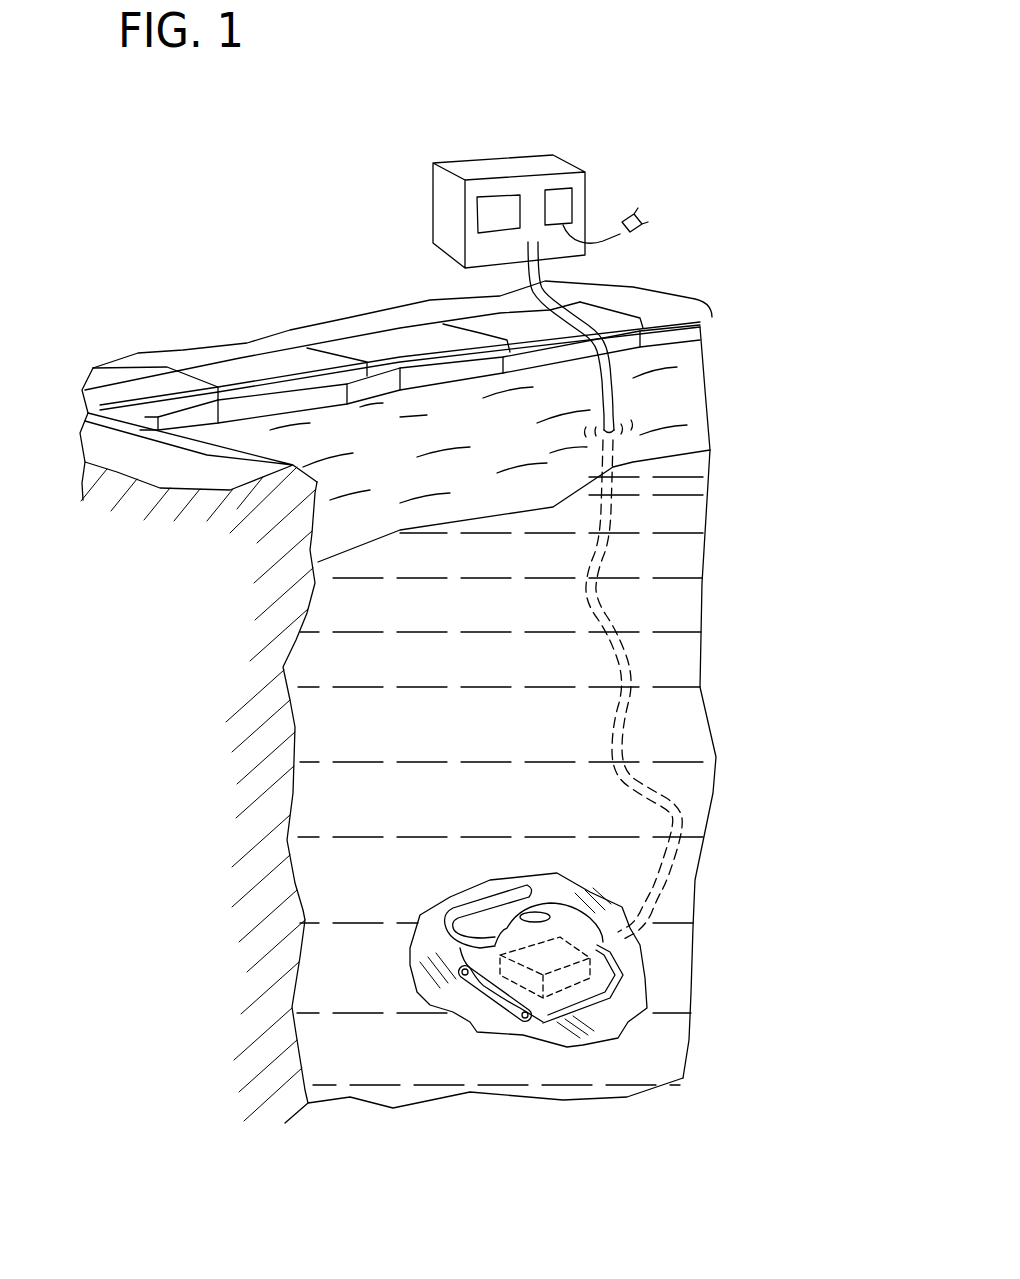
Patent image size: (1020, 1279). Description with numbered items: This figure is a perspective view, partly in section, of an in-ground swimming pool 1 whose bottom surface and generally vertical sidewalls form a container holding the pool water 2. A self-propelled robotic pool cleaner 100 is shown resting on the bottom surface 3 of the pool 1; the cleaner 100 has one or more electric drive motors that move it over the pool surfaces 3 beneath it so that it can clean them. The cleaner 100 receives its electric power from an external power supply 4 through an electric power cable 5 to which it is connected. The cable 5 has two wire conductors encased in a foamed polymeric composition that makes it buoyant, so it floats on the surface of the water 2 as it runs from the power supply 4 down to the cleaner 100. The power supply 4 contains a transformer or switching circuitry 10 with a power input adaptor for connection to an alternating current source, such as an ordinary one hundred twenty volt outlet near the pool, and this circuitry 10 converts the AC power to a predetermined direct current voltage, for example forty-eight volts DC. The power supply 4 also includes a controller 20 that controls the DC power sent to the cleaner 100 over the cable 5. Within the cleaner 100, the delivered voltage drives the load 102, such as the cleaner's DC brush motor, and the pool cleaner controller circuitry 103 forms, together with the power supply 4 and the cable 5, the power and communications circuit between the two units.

The swimming pool 1 is at (198, 590).
The pool water 2 is at (257, 427).
The bottom surface 3 is at (622, 1005).
The external power supply 4 is at (448, 223).
The electric power cable 5 is at (615, 425).
The transformer or switching circuitry 10 is at (557, 212).
The controller 20 is at (482, 203).
The self-propelled robotic pool cleaner 100 is at (455, 947).
The load 102 is at (513, 980).
The pool cleaner controller circuitry 103 is at (560, 963).